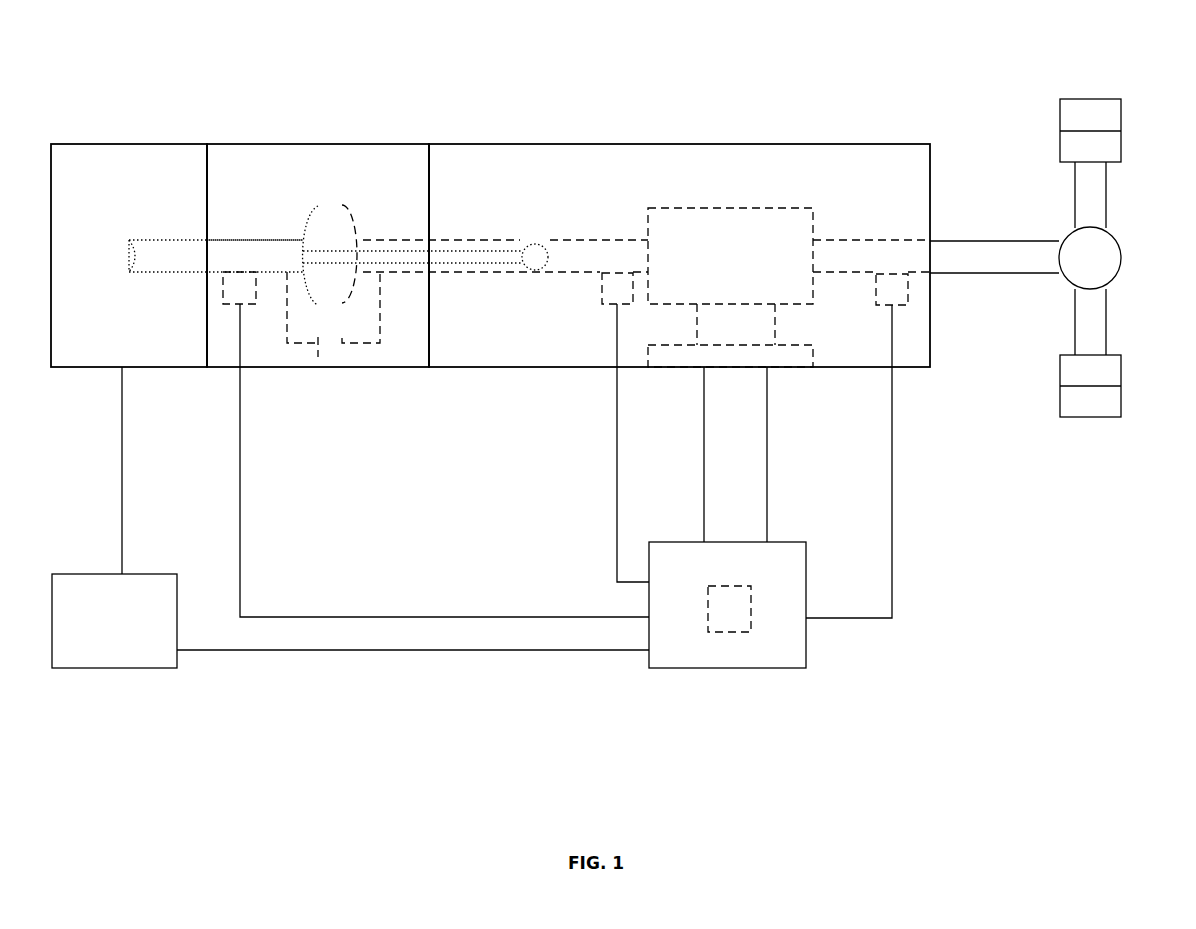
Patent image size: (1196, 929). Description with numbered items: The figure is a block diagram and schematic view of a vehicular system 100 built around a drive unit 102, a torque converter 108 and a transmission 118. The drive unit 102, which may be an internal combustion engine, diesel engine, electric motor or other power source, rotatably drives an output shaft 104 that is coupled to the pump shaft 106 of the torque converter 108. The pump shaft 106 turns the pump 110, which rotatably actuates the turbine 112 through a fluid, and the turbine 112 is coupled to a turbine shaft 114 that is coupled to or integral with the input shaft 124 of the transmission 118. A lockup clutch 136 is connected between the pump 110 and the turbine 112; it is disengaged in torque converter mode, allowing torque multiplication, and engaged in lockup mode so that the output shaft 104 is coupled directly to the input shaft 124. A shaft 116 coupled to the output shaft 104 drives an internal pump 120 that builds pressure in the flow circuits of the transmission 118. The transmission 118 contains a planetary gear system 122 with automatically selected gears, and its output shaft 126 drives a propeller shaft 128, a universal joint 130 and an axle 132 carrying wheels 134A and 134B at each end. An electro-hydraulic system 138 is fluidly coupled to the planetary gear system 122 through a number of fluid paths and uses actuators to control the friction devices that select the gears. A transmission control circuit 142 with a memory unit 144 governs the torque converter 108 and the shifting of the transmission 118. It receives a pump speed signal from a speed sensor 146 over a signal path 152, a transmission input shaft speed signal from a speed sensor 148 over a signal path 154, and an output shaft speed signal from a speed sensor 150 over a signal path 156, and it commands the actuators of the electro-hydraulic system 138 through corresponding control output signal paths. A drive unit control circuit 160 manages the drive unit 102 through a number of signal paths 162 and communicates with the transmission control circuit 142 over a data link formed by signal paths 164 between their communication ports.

The vehicular system 100 is at (115, 86).
The drive unit 102 is at (177, 144).
The output shaft 104 is at (165, 272).
The pump shaft 106 is at (262, 239).
The torque converter 108 is at (295, 144).
The pump 110 is at (307, 220).
The turbine 112 is at (354, 219).
The turbine shaft 114 is at (378, 239).
The shaft 116 is at (458, 262).
The transmission 118 is at (604, 144).
The internal pump 120 is at (537, 240).
The planetary gear system 122 is at (730, 256).
The input shaft 124 is at (622, 240).
The output shaft 126 is at (852, 240).
The propeller shaft 128 is at (994, 241).
The universal joint 130 is at (1120, 277).
The axle 132 is at (1106, 193).
The wheel 134A is at (1077, 99).
The wheel 134B is at (1078, 417).
The lockup clutch 136 is at (342, 350).
The electro-hydraulic system 138 is at (682, 362).
The transmission control circuit 142 is at (736, 668).
The memory unit 144 is at (737, 633).
The speed sensor 146 is at (223, 293).
The speed sensor 148 is at (602, 293).
The speed sensor 150 is at (908, 293).
The signal path 152 is at (410, 610).
The signal path 154 is at (617, 436).
The signal path 156 is at (893, 479).
The drive unit control circuit 160 is at (138, 668).
The signal paths 162 is at (122, 490).
The signal paths 164 is at (405, 651).